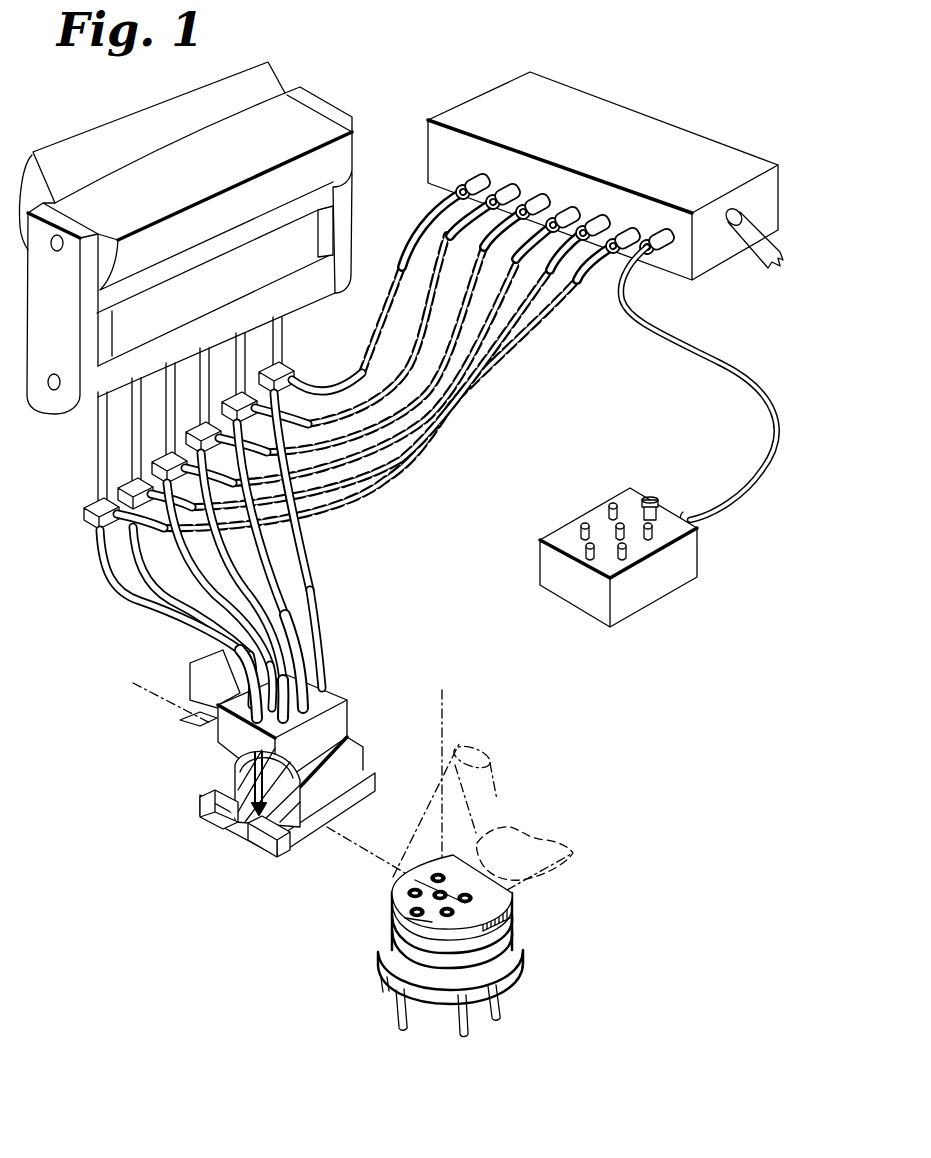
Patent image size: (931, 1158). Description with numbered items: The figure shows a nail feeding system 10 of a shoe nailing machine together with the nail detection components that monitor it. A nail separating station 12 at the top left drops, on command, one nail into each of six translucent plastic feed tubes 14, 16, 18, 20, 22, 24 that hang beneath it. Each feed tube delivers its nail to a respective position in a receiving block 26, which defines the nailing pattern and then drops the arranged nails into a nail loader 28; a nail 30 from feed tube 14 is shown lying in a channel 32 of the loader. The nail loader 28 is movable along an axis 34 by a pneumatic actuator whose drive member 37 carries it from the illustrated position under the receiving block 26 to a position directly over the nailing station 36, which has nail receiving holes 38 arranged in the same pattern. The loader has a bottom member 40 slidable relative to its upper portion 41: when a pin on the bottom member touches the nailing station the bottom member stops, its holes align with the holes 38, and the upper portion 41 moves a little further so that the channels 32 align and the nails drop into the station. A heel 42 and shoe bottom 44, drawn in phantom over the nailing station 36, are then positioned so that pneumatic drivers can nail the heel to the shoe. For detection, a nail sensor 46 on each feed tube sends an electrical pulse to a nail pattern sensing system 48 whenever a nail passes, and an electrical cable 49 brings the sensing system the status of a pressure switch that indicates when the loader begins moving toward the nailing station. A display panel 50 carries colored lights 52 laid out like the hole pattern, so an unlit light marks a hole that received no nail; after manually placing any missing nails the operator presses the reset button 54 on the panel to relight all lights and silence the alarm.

The nail feeding system 10 is at (67, 642).
The nail separating station 12 is at (325, 107).
The feed tube 14 is at (98, 418).
The feed tube 16 is at (133, 425).
The feed tube 18 is at (167, 387).
The feed tube 20 is at (201, 371).
The feed tube 22 is at (243, 351).
The feed tube 24 is at (292, 320).
The receiving block 26 is at (333, 697).
The nail loader 28 is at (216, 880).
The nail 30 is at (210, 782).
The channel 32 is at (233, 775).
The axis 34 is at (373, 853).
The nailing station 36 is at (321, 1005).
The drive member 37 is at (200, 720).
The nail receiving hole 38 is at (417, 910).
The bottom member 40 is at (210, 815).
The upper portion 41 is at (350, 770).
The heel 42 is at (497, 780).
The shoe bottom 44 is at (547, 837).
The nail sensor 46 is at (88, 513).
The nail pattern sensing system 48 is at (652, 123).
The electrical cable 49 is at (758, 252).
The display panel 50 is at (700, 553).
The colored light 52 is at (587, 525).
The reset button 54 is at (657, 493).